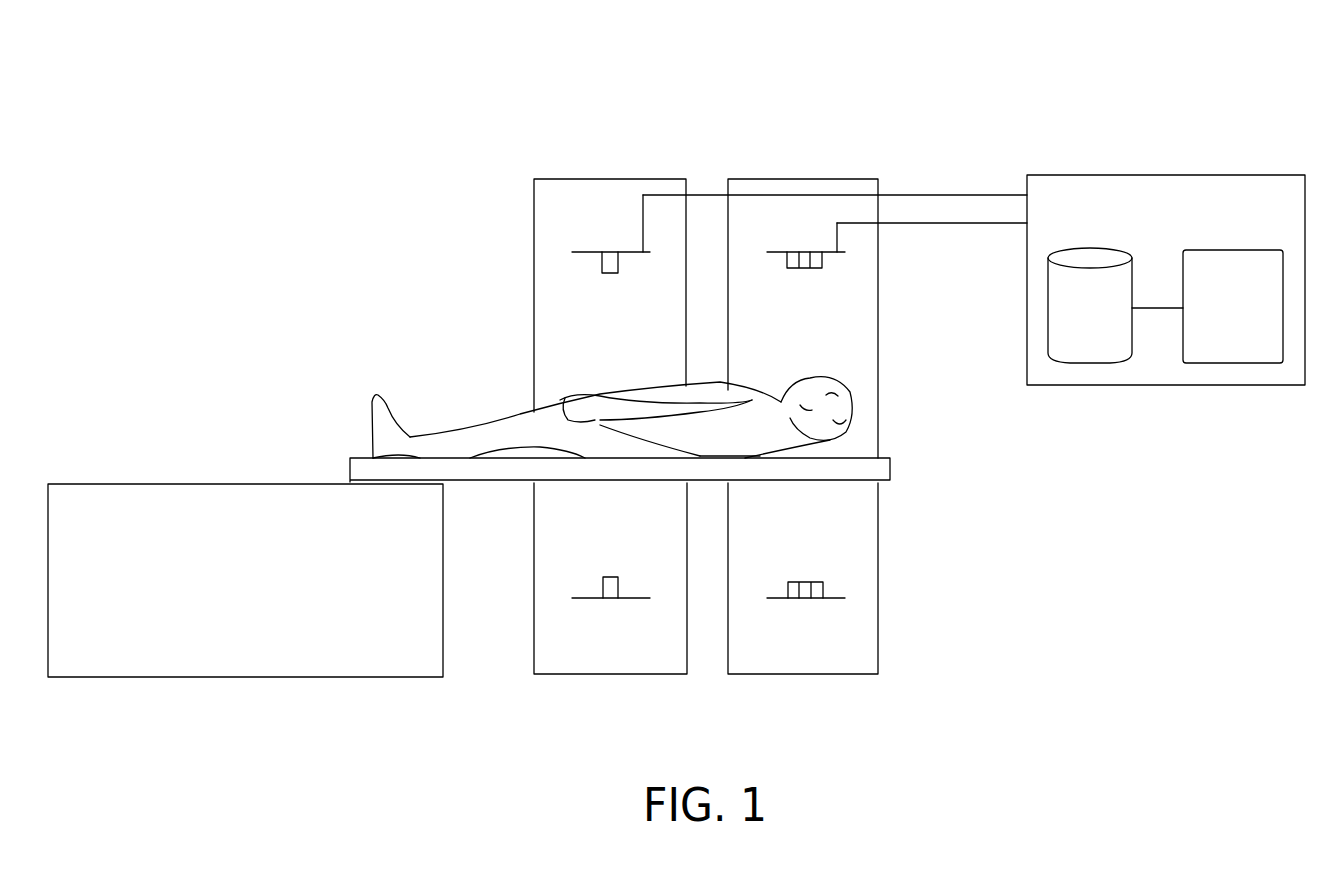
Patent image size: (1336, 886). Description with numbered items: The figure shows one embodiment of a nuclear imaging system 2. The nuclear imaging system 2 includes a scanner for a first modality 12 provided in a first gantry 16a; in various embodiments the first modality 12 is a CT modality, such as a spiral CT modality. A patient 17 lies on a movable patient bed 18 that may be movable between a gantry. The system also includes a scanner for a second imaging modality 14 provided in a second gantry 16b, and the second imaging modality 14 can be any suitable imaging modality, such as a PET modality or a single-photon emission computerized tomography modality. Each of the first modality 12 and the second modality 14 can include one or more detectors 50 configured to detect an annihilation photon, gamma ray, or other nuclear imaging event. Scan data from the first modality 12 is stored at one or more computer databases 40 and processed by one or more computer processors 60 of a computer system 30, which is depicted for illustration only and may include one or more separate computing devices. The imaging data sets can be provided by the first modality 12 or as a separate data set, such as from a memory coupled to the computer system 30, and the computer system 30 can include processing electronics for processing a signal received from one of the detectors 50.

The nuclear imaging system 2 is at (266, 256).
The first modality 12 is at (572, 252).
The second imaging modality 14 is at (778, 252).
The first gantry 16a is at (608, 179).
The second gantry 16b is at (800, 179).
The patient 17 is at (505, 417).
The movable patient bed 18 is at (360, 458).
The computer system 30 is at (1058, 175).
The computer databases 40 is at (1073, 345).
The detectors 50 is at (613, 252).
The computer processors 60 is at (1222, 338).